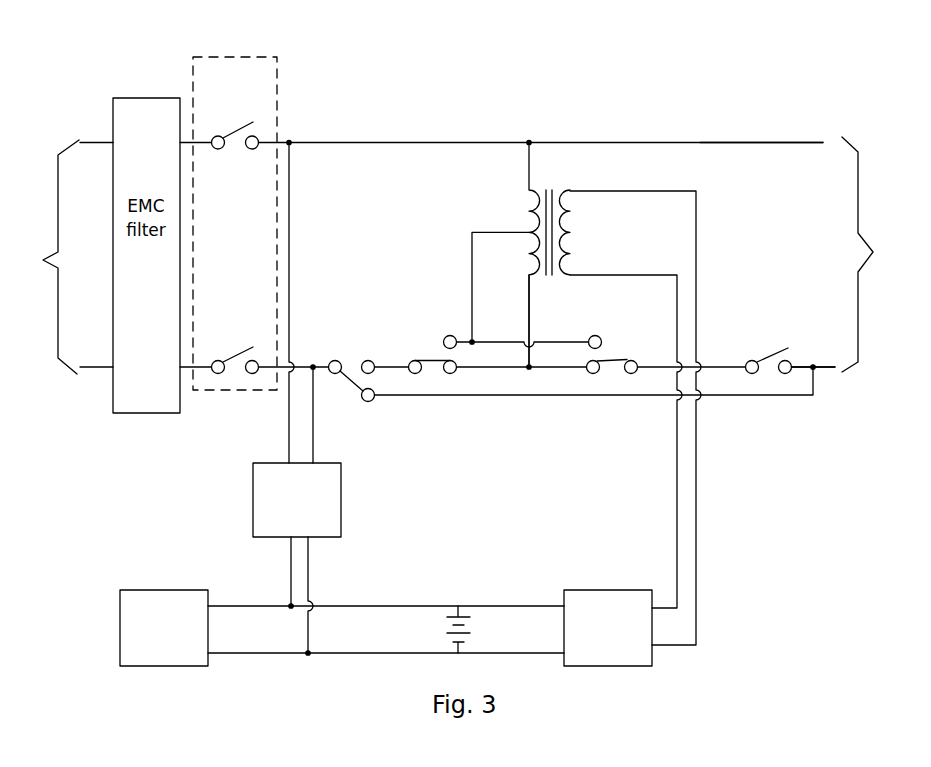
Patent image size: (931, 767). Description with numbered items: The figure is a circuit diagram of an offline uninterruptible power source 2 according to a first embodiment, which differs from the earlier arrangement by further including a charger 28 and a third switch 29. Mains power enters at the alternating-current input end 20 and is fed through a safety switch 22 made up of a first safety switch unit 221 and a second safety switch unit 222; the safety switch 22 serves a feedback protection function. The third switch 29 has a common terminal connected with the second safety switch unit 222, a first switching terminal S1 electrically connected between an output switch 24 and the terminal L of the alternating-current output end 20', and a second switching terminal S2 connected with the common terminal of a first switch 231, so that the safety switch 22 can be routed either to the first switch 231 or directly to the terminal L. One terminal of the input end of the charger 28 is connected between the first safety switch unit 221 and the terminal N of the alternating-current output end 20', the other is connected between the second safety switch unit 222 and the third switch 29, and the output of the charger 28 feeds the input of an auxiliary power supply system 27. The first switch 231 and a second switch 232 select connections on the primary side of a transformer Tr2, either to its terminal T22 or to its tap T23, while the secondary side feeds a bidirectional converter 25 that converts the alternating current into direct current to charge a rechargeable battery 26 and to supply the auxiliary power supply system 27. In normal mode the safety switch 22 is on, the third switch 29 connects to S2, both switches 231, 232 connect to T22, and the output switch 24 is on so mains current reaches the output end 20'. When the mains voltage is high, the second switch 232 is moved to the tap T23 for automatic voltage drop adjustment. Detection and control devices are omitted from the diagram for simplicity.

The offline uninterruptible power source 2 is at (819, 643).
The alternating-current input end 20 is at (48, 257).
The alternating-current output end 20' is at (875, 254).
The safety switch 22 is at (236, 57).
The first safety switch unit 221 is at (229, 122).
The second safety switch unit 222 is at (229, 344).
The third switch 29 is at (357, 360).
The first switch 231 is at (428, 342).
The second switch 232 is at (617, 346).
The output switch 24 is at (768, 350).
The bidirectional converter 25 is at (607, 590).
The rechargeable battery 26 is at (475, 638).
The auxiliary power supply system 27 is at (162, 590).
The charger 28 is at (341, 500).
The transformer Tr2 is at (550, 188).
The terminal of the primary side of the transformer T22 is at (528, 287).
The tap of the primary side of the transformer T23 is at (512, 232).
The first switching terminal S1 is at (374, 406).
The second switching terminal S2 is at (374, 356).
The terminal N of the alternating-current output end N is at (802, 143).
The terminal L of the alternating-current output end L is at (825, 366).